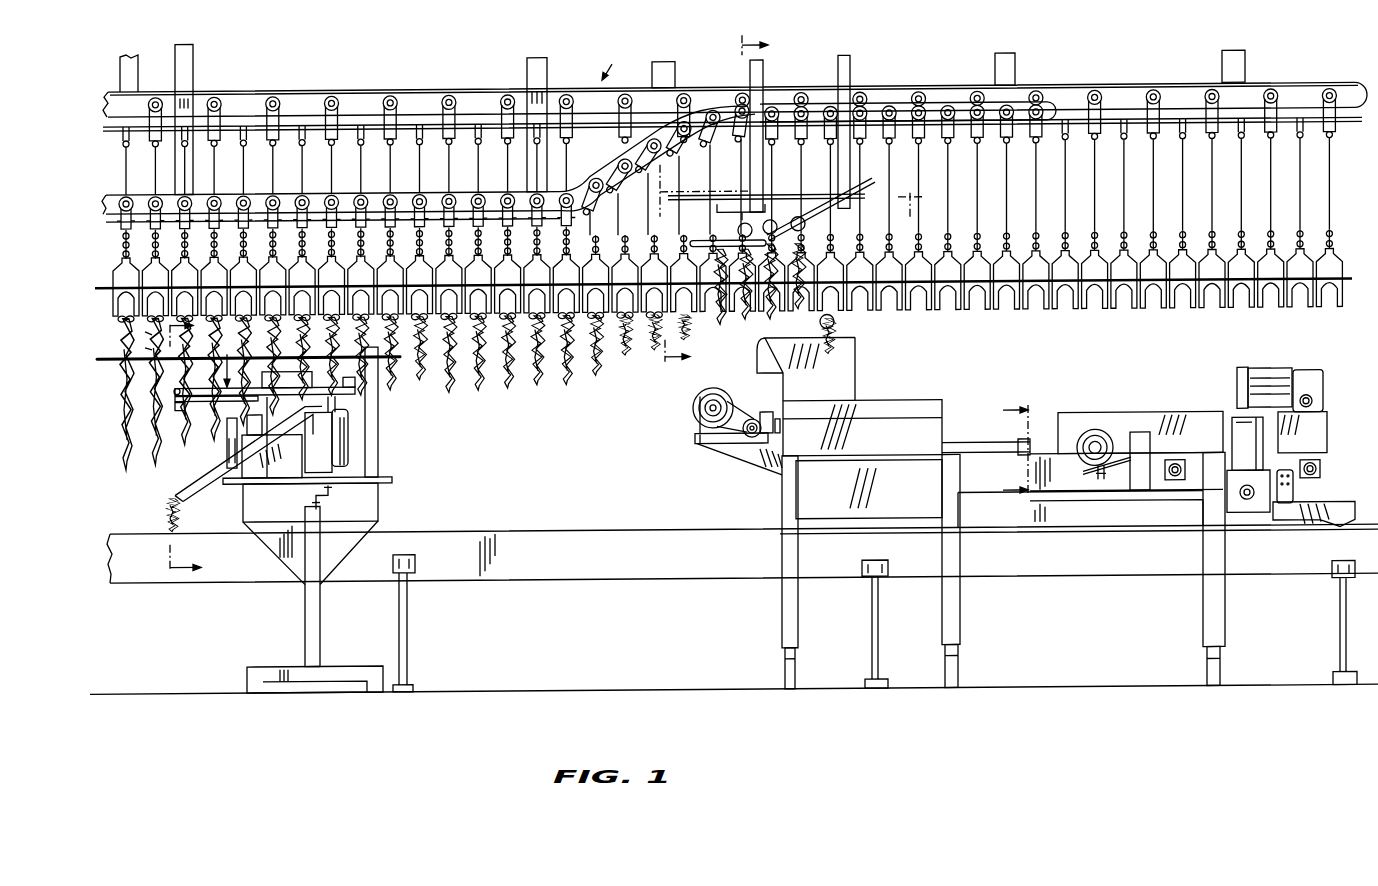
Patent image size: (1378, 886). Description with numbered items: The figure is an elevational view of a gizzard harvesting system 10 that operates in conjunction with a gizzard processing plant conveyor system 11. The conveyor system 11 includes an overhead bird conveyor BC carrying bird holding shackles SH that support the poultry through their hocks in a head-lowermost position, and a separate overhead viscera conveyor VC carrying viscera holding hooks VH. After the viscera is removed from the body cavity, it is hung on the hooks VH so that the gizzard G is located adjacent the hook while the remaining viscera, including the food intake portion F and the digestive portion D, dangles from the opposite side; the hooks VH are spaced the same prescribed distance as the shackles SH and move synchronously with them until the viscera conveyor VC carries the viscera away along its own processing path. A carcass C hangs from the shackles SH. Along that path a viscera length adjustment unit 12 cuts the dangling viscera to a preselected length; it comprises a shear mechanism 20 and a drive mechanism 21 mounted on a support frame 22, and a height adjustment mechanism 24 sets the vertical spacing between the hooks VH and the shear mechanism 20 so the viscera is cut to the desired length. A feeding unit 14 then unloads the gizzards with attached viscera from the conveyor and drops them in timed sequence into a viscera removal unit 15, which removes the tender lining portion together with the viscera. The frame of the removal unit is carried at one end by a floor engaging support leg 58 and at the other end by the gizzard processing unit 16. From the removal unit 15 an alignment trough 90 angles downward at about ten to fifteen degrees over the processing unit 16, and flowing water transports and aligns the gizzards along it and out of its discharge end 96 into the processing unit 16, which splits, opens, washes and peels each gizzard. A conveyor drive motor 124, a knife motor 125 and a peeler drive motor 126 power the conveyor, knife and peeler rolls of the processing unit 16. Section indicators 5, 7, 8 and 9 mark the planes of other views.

The overhead bird conveyor BC is at (362, 94).
The overhead viscera conveyor VC is at (121, 195).
The bird holding shackles SH is at (119, 266).
The viscera holding hooks VH is at (130, 326).
The digestive portion D is at (122, 392).
The gizzard G is at (144, 332).
The food intake portion F is at (144, 348).
The carcass C is at (220, 360).
The section line 5- 5 is at (192, 446).
The section line 7- 7 is at (725, 198).
The section line 8- 8 is at (656, 192).
The section line 9- 9 is at (1006, 444).
The gizzard harvesting system 10 is at (612, 449).
The gizzard processing plant conveyor system 11 is at (614, 60).
The viscera length adjustment unit 12 is at (420, 433).
The feeding unit 14 is at (782, 203).
The viscera removal unit 15 is at (859, 408).
The gizzard processing unit 16 is at (1175, 418).
The shear mechanism 20 is at (190, 414).
The drive mechanism 21 is at (227, 457).
The support frame 22 is at (382, 503).
The height adjustment mechanism 24 is at (335, 499).
The floor engaging support leg 58 is at (786, 612).
The alignment trough 90 is at (985, 457).
The discharge end 96 is at (1021, 457).
The conveyor drive motor 124 is at (1262, 387).
The knife motor 125 is at (1097, 439).
The peeler drive motor 126 is at (1232, 445).